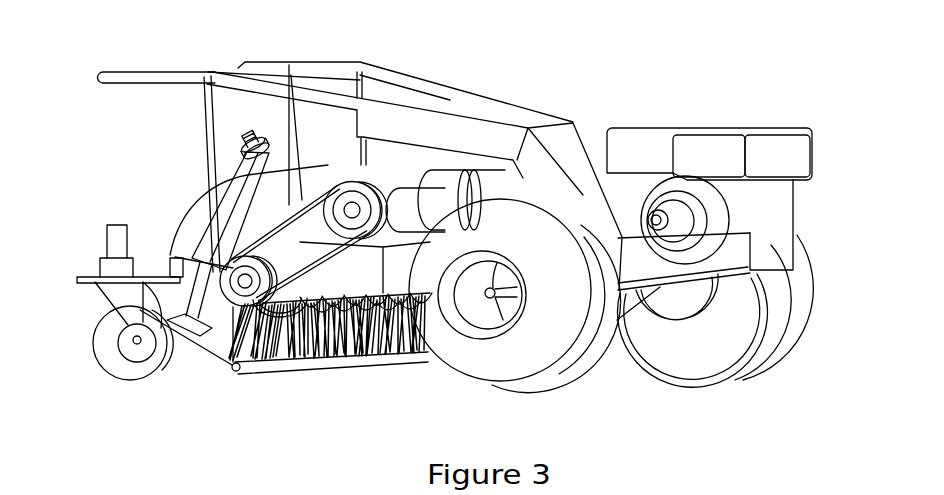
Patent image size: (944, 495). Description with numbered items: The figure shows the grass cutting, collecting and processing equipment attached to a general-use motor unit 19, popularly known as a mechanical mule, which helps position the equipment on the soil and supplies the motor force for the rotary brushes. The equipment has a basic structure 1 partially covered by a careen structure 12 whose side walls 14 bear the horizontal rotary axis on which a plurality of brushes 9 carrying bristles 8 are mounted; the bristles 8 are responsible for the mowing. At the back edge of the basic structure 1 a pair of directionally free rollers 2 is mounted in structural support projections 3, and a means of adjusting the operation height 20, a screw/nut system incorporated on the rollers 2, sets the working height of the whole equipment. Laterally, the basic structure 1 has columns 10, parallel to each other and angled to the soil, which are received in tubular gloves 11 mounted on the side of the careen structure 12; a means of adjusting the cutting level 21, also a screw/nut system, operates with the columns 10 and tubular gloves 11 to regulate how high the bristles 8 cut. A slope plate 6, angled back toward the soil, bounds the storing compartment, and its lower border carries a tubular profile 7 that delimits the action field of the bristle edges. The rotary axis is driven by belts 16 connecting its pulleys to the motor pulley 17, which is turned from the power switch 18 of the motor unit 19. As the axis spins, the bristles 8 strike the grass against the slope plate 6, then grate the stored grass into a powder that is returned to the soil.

The basic structure 1 is at (157, 255).
The rollers directionally free 2 is at (143, 390).
The structural support projections 3 is at (142, 272).
The slope plate 6 is at (218, 358).
The tubular profile 7 is at (283, 374).
The bristles 8 is at (338, 368).
The brushes 9 is at (264, 364).
The columns 10 is at (197, 362).
The tubular gloves 11 is at (230, 212).
The careen structure 12 is at (338, 172).
The side walls 14 is at (200, 225).
The belts 16 is at (289, 65).
The motor pulley 17 is at (427, 193).
The power switch 18 is at (437, 160).
The motor unit 19 is at (666, 118).
The means of adjusting of operation height 20 is at (103, 262).
The means of adjusting the level of cutting 21 is at (254, 138).